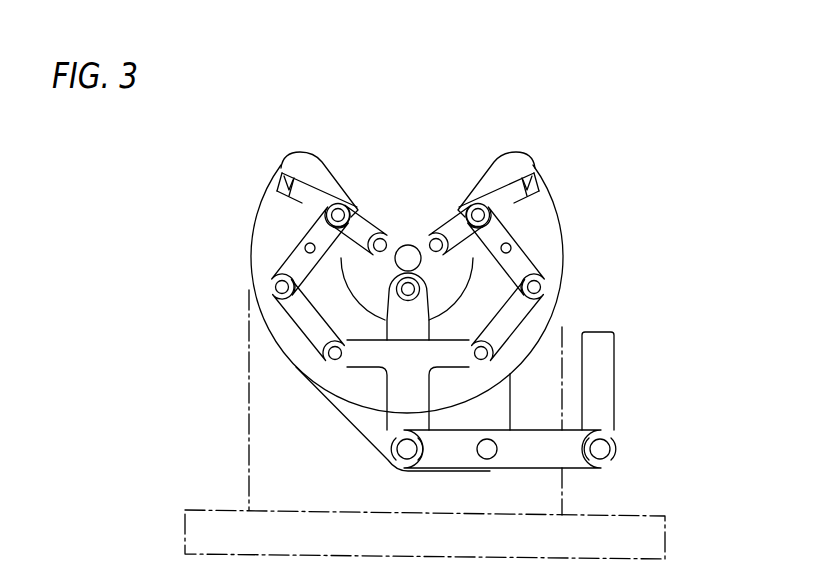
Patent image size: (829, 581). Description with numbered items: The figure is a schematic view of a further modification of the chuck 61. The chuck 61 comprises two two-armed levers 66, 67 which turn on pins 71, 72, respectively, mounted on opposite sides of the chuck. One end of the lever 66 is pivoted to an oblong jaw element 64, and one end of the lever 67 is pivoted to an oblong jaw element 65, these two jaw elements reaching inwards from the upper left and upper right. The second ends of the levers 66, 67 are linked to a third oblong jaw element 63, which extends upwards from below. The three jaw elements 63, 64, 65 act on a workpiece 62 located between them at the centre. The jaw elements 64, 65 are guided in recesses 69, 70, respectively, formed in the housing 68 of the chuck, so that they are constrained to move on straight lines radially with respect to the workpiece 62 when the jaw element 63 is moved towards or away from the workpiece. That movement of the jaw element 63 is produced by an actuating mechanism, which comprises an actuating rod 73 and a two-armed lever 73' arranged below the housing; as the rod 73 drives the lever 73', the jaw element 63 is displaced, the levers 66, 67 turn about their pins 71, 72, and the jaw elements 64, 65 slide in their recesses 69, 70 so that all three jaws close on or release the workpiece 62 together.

The chuck 61 is at (600, 130).
The workpiece 62 is at (408, 255).
The oblong jaw element 63 is at (413, 322).
The oblong jaw element 64 is at (364, 228).
The oblong jaw element 65 is at (450, 233).
The two-armed lever 66 is at (287, 262).
The two-armed lever 67 is at (528, 260).
The housing 68 is at (481, 180).
The recess 69 is at (290, 172).
The recess 70 is at (535, 172).
The pin 71 is at (300, 246).
The pin 72 is at (512, 247).
The actuating rod 73 is at (629, 379).
The two-armed lever 73' is at (540, 461).